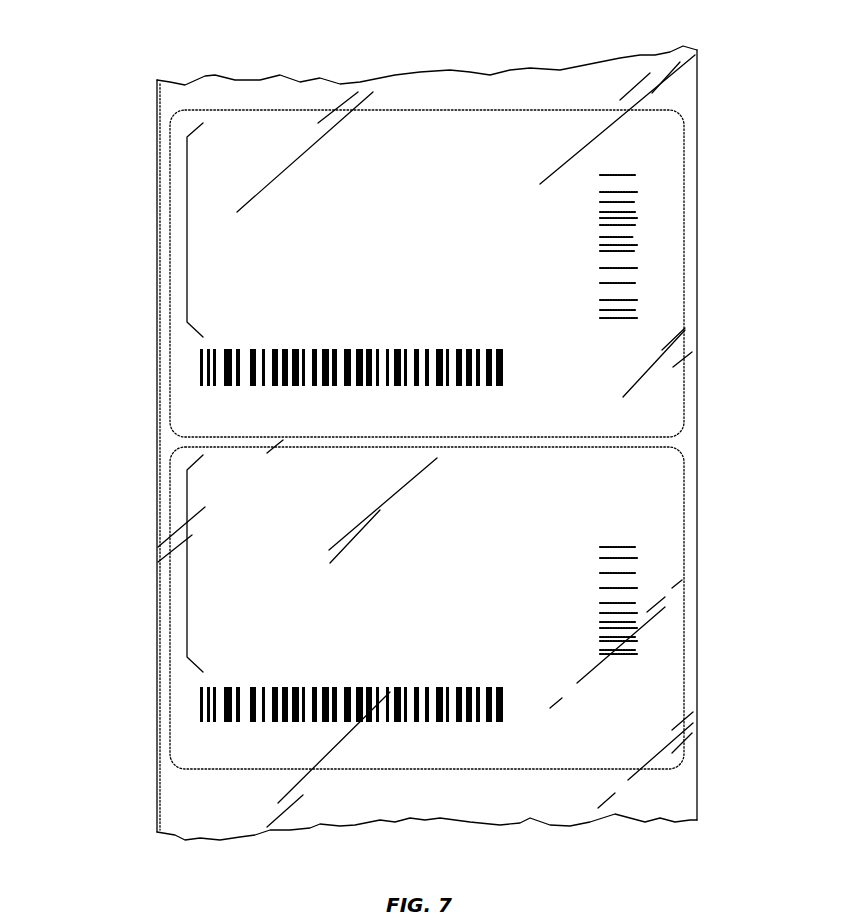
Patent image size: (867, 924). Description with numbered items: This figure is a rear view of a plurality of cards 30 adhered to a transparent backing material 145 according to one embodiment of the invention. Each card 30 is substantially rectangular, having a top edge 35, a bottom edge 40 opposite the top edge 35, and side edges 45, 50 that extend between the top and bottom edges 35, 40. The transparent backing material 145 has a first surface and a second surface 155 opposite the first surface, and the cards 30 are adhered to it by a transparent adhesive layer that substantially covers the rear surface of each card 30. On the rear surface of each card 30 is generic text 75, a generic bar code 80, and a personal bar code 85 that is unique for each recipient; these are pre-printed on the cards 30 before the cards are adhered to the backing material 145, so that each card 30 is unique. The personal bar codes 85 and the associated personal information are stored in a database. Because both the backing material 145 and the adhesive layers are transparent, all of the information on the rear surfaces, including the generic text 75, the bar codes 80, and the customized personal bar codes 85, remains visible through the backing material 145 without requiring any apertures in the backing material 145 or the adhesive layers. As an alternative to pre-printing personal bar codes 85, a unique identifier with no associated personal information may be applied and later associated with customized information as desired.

The card 30 is at (104, 224).
The top edge 35 is at (462, 110).
The bottom edge 40 is at (622, 433).
The side edge 45 is at (684, 285).
The side edge 50 is at (170, 318).
The generic text 75 is at (187, 208).
The bar code 80 is at (233, 375).
The personal bar code 85 is at (630, 236).
The backing material 145 is at (697, 96).
The second surface 155 is at (584, 96).